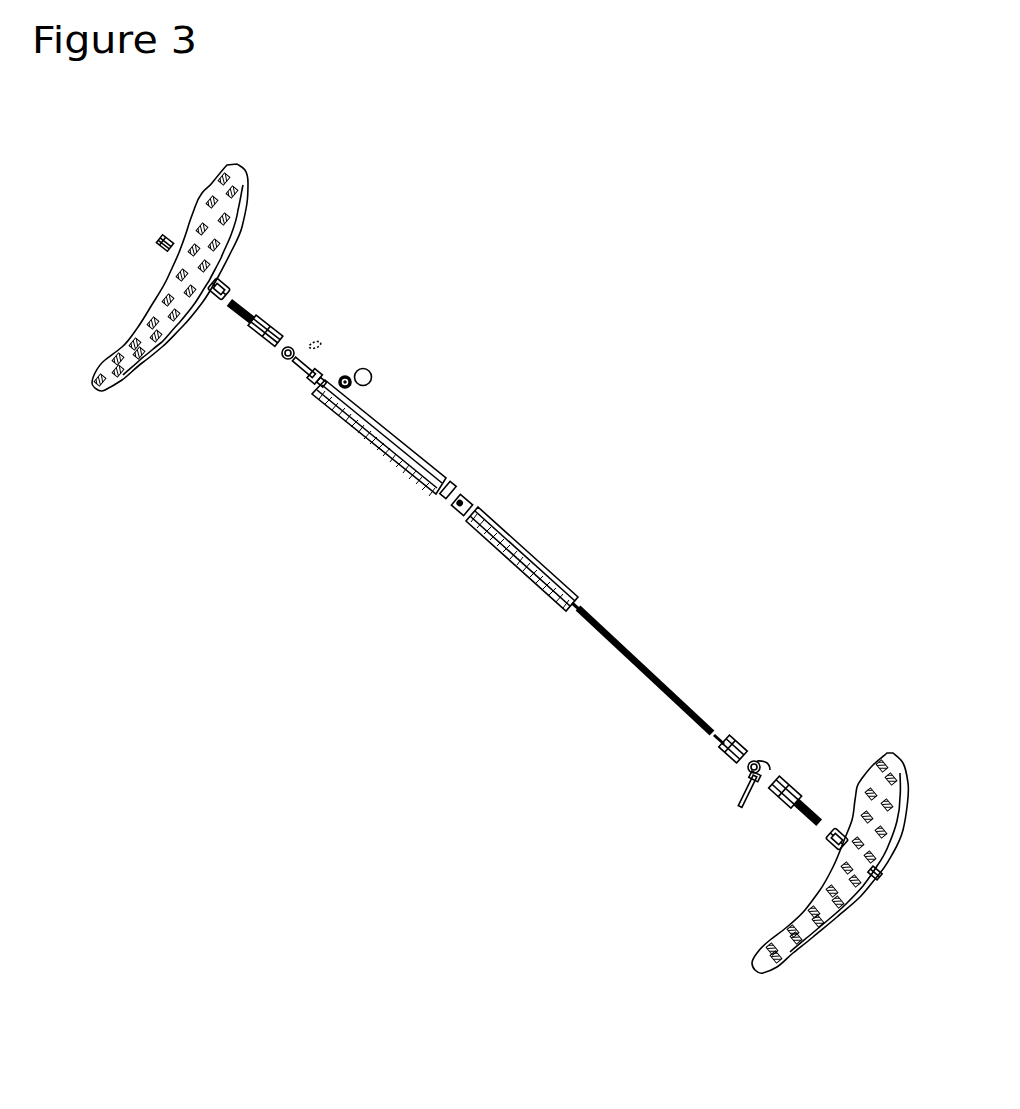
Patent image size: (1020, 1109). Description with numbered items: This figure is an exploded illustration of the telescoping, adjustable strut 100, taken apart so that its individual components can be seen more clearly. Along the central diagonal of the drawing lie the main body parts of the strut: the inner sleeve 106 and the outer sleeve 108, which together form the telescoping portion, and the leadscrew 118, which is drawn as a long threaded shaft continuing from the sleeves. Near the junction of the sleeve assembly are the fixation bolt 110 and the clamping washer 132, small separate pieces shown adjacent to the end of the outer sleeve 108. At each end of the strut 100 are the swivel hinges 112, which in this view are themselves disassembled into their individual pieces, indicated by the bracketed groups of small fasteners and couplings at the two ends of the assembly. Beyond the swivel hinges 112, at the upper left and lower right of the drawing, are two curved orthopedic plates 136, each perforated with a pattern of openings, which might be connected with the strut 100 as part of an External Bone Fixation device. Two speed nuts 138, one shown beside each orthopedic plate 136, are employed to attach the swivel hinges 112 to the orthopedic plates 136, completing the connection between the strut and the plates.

The strut 100 is at (540, 73).
The inner sleeve 106 is at (532, 558).
The outer sleeve 108 is at (423, 460).
The fixation bolt 110 is at (362, 365).
The swivel hinges 112 is at (322, 337).
The leadscrew 118 is at (635, 665).
The clamping washer 132 is at (340, 373).
The orthopedic plates 136 is at (147, 355).
The speed nuts 138 is at (163, 240).